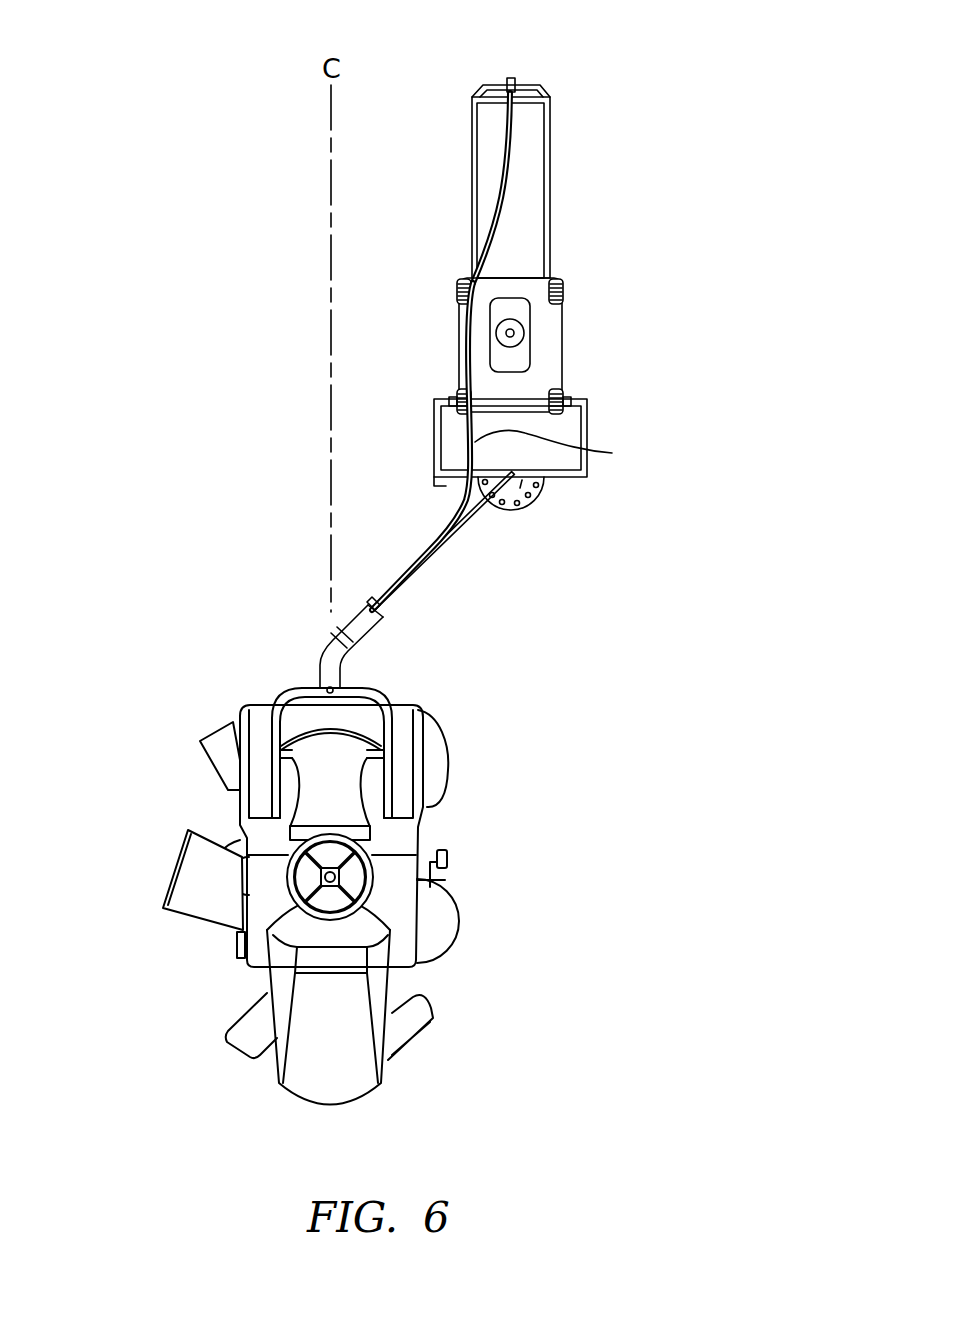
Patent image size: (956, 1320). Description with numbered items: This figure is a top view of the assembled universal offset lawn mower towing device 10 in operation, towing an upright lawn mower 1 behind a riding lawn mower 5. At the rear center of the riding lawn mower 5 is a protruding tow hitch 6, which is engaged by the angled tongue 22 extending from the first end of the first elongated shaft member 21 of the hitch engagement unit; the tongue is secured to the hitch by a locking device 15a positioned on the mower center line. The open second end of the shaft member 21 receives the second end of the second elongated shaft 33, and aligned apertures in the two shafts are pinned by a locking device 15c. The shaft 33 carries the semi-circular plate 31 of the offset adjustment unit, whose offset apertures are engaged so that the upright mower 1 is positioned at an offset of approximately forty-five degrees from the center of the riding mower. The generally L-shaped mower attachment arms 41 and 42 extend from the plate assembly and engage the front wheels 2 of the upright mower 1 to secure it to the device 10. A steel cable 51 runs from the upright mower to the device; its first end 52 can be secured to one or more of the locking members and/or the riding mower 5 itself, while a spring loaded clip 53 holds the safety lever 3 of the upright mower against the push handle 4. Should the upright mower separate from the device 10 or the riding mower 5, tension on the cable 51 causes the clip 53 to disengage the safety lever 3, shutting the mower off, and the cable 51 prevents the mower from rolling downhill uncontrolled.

The upright lawn mower 1 is at (543, 335).
The front wheels 2 is at (458, 395).
The safety lever 3 is at (525, 82).
The push handle 4 is at (495, 103).
The riding lawn mower 5 is at (214, 956).
The tow hitch 6 is at (368, 690).
The universal offset lawn mower towing device 10 is at (190, 260).
The locking device 15a is at (325, 686).
The locking device 15c is at (372, 600).
The first elongated shaft member 21 is at (387, 634).
The angled tongue 22 is at (320, 631).
The semi-circular plate 31 is at (520, 495).
The second elongated shaft 33 is at (480, 515).
The mower attachment arm 41 is at (570, 485).
The mower attachment arm 42 is at (434, 486).
The steel cable 51 is at (562, 449).
The cable first end 52 is at (385, 608).
The spring loaded clip 53 is at (509, 73).